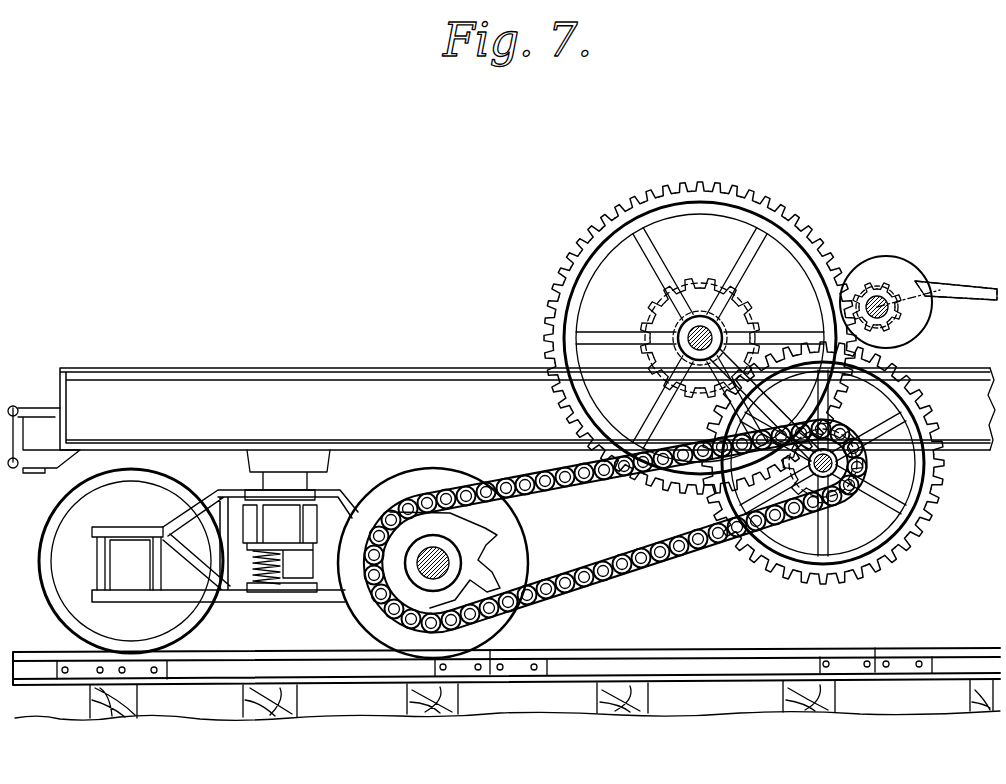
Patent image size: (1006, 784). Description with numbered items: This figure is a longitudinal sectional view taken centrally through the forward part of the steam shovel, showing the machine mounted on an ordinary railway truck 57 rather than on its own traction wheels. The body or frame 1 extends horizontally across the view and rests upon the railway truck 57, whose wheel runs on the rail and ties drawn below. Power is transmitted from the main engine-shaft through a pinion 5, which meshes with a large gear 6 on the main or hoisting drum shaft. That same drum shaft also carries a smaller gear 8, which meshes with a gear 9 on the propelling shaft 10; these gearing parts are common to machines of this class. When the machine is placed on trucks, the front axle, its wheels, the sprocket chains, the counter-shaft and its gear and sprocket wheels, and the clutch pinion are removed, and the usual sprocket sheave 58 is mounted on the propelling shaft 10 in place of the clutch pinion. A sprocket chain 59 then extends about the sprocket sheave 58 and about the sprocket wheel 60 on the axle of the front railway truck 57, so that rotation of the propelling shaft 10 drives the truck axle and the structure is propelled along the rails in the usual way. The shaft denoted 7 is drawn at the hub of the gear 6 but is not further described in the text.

The body or frame 1 is at (357, 371).
The pinion 5 is at (882, 293).
The gear 6 is at (597, 233).
The shaft 7 is at (686, 350).
The gear 8 is at (697, 296).
The gear 9 is at (942, 447).
The propelling shaft 10 is at (828, 481).
The railway truck 57 is at (243, 599).
The sprocket sheave 58 is at (815, 511).
The sprocket chain 59 is at (611, 478).
The sprocket wheel 60 is at (480, 555).